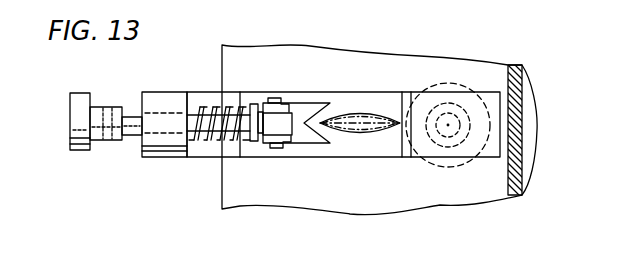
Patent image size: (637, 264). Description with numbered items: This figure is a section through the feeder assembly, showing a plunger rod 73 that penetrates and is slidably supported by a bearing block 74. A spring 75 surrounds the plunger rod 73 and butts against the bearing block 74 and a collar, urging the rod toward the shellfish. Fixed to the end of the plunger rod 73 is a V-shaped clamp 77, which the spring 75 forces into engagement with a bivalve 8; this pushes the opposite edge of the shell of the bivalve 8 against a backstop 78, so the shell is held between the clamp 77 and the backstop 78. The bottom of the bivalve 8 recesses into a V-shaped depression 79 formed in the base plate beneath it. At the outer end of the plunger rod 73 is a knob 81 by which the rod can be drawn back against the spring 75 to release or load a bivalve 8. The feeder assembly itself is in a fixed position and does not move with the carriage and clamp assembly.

The bivalve 8 is at (368, 118).
The plunger rod 73 is at (137, 120).
The bearing block 74 is at (165, 98).
The spring 75 is at (208, 142).
The V-shaped clamp 77 is at (304, 106).
The backstop 78 is at (405, 100).
The V-shaped depression 79 is at (364, 140).
The knob 81 is at (78, 130).